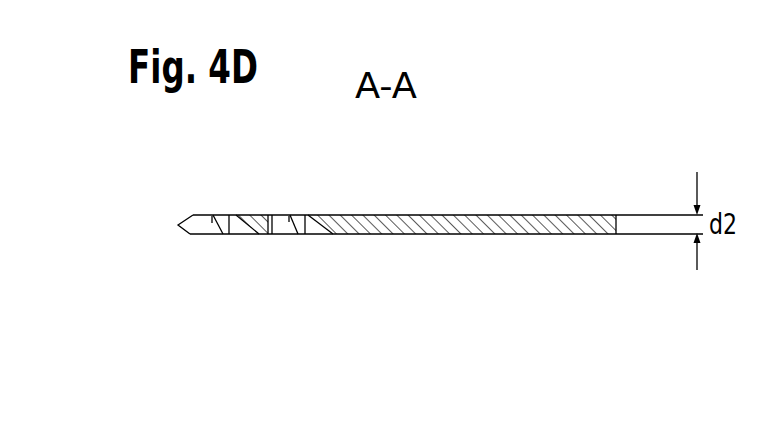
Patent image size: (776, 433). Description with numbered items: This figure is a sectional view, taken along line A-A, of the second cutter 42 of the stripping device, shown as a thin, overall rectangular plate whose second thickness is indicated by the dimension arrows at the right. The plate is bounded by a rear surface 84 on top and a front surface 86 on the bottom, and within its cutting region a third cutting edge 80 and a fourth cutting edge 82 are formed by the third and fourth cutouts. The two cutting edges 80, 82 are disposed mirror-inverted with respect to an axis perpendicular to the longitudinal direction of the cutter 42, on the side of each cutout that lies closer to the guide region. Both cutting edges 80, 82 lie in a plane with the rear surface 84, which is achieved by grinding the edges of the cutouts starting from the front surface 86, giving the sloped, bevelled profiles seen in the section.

The second cutter 42 is at (537, 200).
The third cutting edge 80 is at (224, 199).
The fourth cutting edge 82 is at (297, 198).
The rear surface 84 is at (452, 214).
The front surface 86 is at (438, 235).